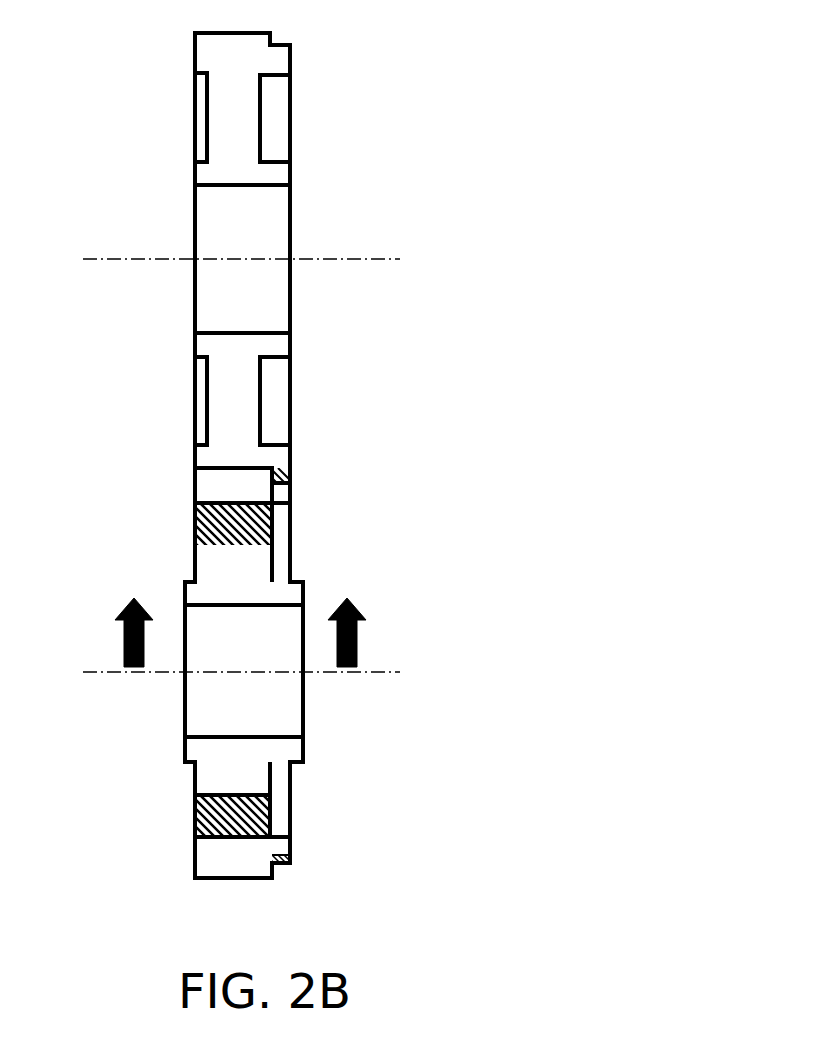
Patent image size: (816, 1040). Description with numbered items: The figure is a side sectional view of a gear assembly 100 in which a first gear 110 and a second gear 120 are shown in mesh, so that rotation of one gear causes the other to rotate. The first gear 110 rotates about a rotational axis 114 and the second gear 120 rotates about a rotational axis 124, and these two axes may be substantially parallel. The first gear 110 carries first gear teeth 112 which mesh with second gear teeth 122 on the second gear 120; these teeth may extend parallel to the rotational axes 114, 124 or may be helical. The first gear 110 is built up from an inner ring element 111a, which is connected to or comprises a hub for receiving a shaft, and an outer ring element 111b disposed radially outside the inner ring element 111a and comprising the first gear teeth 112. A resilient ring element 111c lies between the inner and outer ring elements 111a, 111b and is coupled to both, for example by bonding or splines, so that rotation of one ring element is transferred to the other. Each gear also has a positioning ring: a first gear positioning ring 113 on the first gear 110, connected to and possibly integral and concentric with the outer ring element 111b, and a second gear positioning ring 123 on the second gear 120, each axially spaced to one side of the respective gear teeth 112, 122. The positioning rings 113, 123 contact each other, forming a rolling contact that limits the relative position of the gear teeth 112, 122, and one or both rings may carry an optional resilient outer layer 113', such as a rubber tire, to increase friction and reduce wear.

The gear assembly 100 is at (520, 434).
The first gear 110 is at (242, 573).
The inner ring element 111a is at (277, 751).
The outer ring element 111b is at (210, 862).
The resilient ring element 111c is at (202, 815).
The first gear teeth 112 is at (207, 478).
The first gear positioning ring 113 is at (338, 499).
The resilient outer layer 113' is at (364, 475).
The rotational axis of the first gear 114 is at (95, 672).
The second gear 120 is at (220, 123).
The second gear teeth 122 is at (207, 462).
The second gear positioning ring 123 is at (280, 456).
The rotational axis of the second gear 124 is at (112, 259).